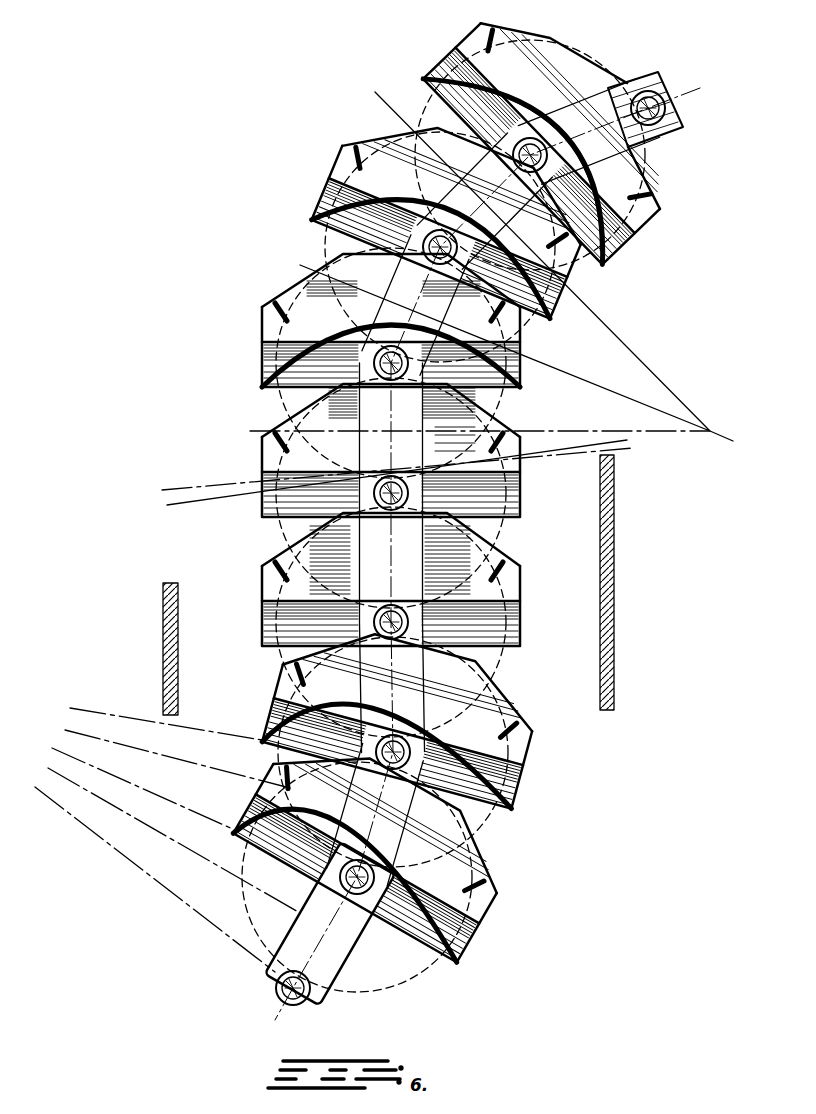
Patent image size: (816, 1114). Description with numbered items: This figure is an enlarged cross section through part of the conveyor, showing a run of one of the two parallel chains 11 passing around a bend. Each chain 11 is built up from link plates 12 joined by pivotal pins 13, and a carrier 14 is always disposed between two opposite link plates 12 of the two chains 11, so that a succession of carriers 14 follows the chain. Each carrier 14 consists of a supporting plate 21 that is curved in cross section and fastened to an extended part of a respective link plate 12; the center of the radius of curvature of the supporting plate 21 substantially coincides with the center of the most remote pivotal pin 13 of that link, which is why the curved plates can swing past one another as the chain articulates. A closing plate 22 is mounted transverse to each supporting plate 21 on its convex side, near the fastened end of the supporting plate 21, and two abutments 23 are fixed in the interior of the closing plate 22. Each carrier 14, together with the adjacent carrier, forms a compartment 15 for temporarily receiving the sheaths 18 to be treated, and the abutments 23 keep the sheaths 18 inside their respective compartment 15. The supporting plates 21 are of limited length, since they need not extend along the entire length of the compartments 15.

The chain 11 is at (337, 979).
The link plate 12 is at (592, 112).
The pivotal pin 13 is at (645, 92).
The carrier 14 is at (302, 197).
The compartment 15 is at (364, 122).
The sheath 18 is at (418, 88).
The supporting plate 21 is at (430, 75).
The closing plate 22 is at (462, 52).
The abutment 23 is at (497, 42).